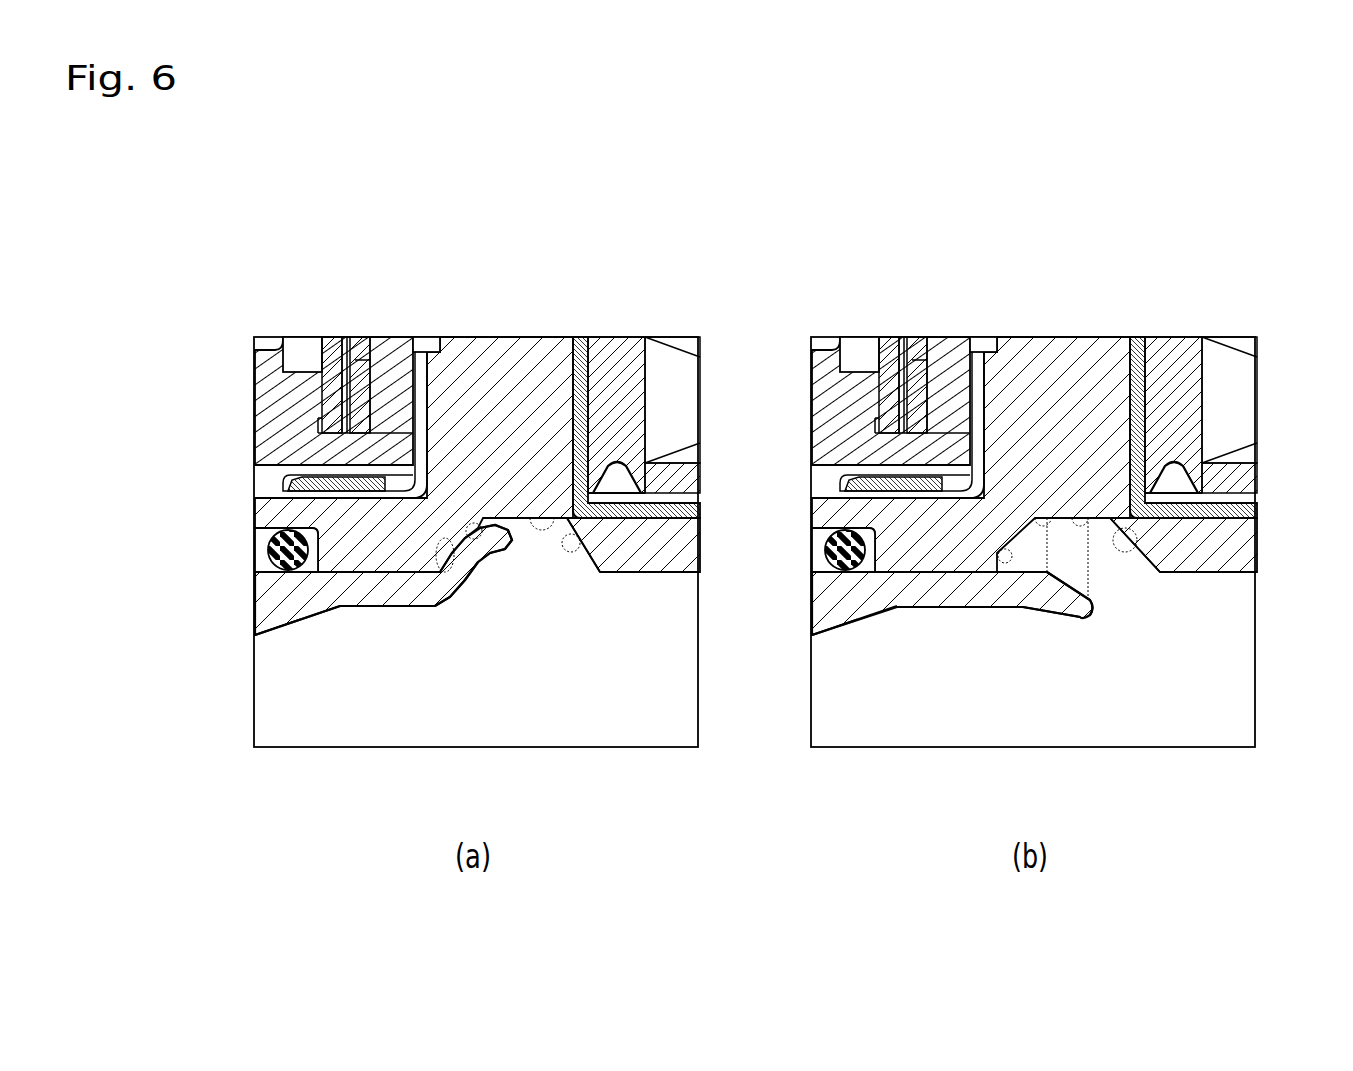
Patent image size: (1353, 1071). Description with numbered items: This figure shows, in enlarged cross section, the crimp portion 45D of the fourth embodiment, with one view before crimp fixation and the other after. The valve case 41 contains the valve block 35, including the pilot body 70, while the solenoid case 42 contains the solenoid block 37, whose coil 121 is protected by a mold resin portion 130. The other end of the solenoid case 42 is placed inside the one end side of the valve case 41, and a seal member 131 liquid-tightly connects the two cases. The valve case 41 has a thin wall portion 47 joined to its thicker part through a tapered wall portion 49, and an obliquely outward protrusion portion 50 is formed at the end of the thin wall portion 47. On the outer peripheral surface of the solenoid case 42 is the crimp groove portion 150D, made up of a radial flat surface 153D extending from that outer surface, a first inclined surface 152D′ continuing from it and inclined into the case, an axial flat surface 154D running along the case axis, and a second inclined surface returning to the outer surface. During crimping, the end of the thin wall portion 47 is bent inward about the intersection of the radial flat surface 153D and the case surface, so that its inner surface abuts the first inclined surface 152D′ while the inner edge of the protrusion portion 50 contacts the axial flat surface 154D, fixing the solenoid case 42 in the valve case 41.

The valve block 35 is at (303, 322).
The solenoid block 37 is at (654, 324).
The pilot body 70 is at (270, 392).
The coil 121 is at (674, 366).
The mold resin portion 130 is at (688, 489).
The seal member 131 is at (262, 548).
The solenoid case 42 is at (657, 596).
The thin wall portion 47 is at (407, 598).
The tapered wall portion 49 is at (300, 618).
The valve case 41 is at (272, 647).
The crimp portion 45D is at (502, 578).
The protrusion portion 50 is at (545, 575).
The crimp groove portion 150D is at (590, 582).
The radial flat surface 153D is at (447, 522).
The axial flat surface 154D is at (553, 520).
The first inclined surface 152D′ is at (492, 522).